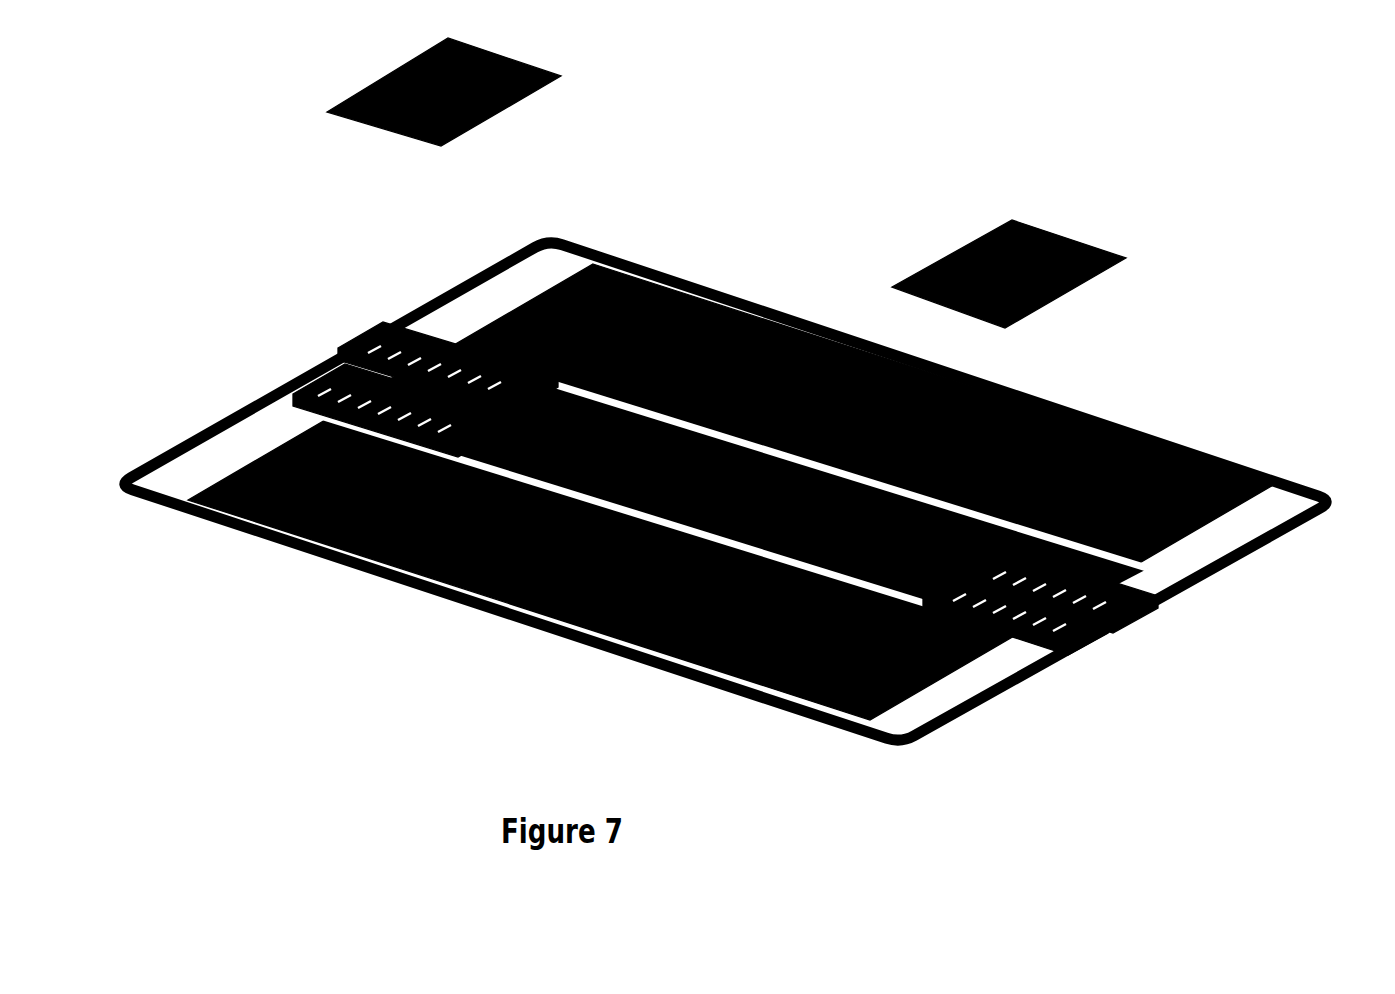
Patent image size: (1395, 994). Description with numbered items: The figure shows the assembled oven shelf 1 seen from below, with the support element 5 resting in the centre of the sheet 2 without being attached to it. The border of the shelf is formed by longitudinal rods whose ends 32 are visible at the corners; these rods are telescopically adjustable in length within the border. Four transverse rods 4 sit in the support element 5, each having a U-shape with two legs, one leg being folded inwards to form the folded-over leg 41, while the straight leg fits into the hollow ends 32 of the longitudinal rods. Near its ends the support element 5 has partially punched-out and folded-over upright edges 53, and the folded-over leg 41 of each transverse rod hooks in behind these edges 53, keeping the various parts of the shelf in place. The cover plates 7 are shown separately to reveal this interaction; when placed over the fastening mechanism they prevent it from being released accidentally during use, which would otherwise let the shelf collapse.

The solar module assembly 1 is at (995, 109).
The panel 2 is at (731, 492).
The transverse rod 4 is at (467, 283).
The support element 5 is at (730, 492).
The cover plate 7 is at (411, 362).
The end 32 is at (584, 240).
The folded-over leg 41 is at (432, 437).
The upright edge 53 is at (378, 420).